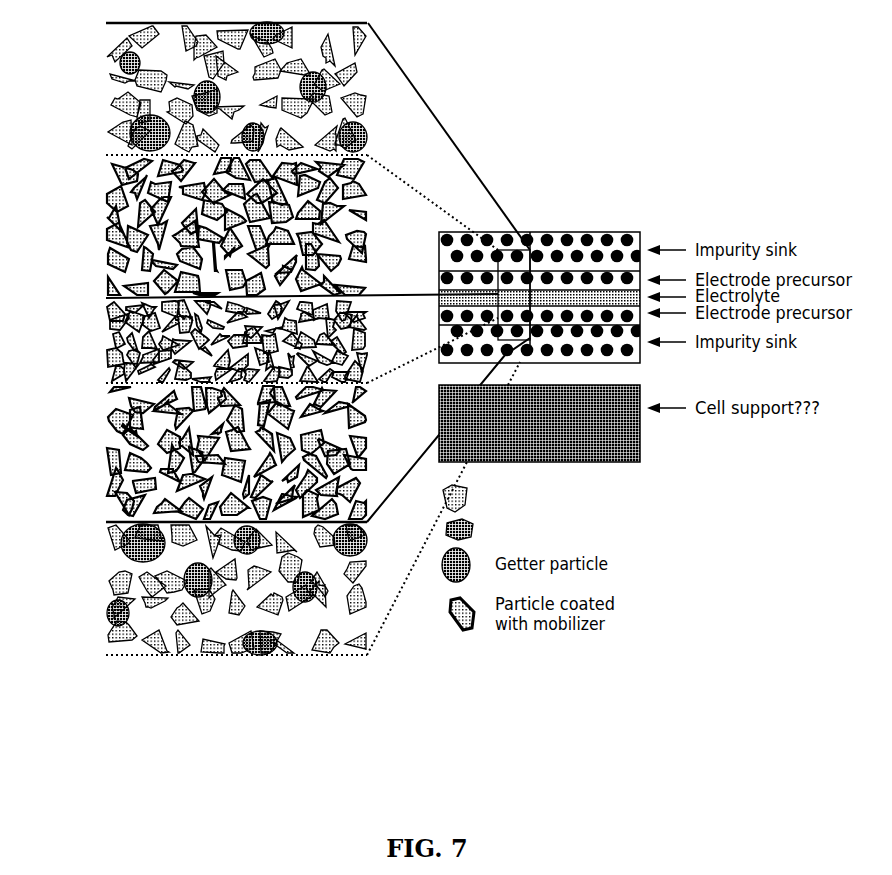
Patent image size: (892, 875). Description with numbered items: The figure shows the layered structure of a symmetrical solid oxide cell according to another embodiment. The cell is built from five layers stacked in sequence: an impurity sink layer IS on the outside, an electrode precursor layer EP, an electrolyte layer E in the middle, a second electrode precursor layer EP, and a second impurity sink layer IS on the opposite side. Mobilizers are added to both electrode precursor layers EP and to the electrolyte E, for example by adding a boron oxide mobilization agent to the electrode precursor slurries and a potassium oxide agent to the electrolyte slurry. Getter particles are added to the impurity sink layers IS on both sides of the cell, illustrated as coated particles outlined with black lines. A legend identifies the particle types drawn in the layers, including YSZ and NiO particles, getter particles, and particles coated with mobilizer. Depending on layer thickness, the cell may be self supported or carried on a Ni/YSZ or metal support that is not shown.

The impurity sink layer IS is at (195, 338).
The electrode precursor layer EP is at (195, 338).
The electrolyte layer E is at (260, 338).
The yttria-stabilized zirconia YSZ is at (486, 498).
The nickel oxide particle NiO is at (485, 529).